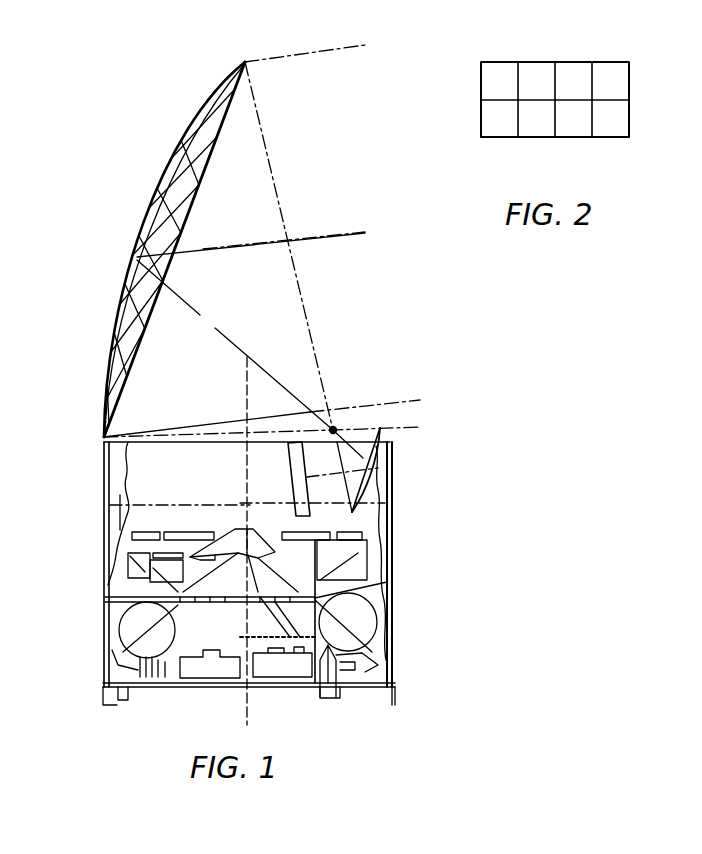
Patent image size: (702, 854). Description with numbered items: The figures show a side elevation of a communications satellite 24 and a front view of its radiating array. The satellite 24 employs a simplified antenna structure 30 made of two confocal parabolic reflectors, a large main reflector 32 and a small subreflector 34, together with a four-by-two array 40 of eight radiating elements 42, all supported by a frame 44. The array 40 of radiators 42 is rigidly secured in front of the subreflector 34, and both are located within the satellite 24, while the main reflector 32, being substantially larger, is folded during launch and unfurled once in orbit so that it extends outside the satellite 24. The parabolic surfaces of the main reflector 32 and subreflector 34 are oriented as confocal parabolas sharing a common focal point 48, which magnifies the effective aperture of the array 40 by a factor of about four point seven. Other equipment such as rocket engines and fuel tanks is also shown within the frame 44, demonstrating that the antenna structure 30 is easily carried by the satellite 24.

In FIG. 1, the satellite 24 is at (358, 356).
In FIG. 1, the antenna structure 30 is at (104, 266).
In FIG. 1, the main reflector 32 is at (192, 120).
In FIG. 1, the subreflector 34 is at (384, 432).
In FIG. 1, the array 40 is at (290, 466).
In FIG. 2, the array 40 is at (526, 150).
In FIG. 2, the radiating elements 42 is at (568, 80).
In FIG. 1, the frame 44 is at (392, 466).
In FIG. 1, the focal point 48 is at (336, 426).